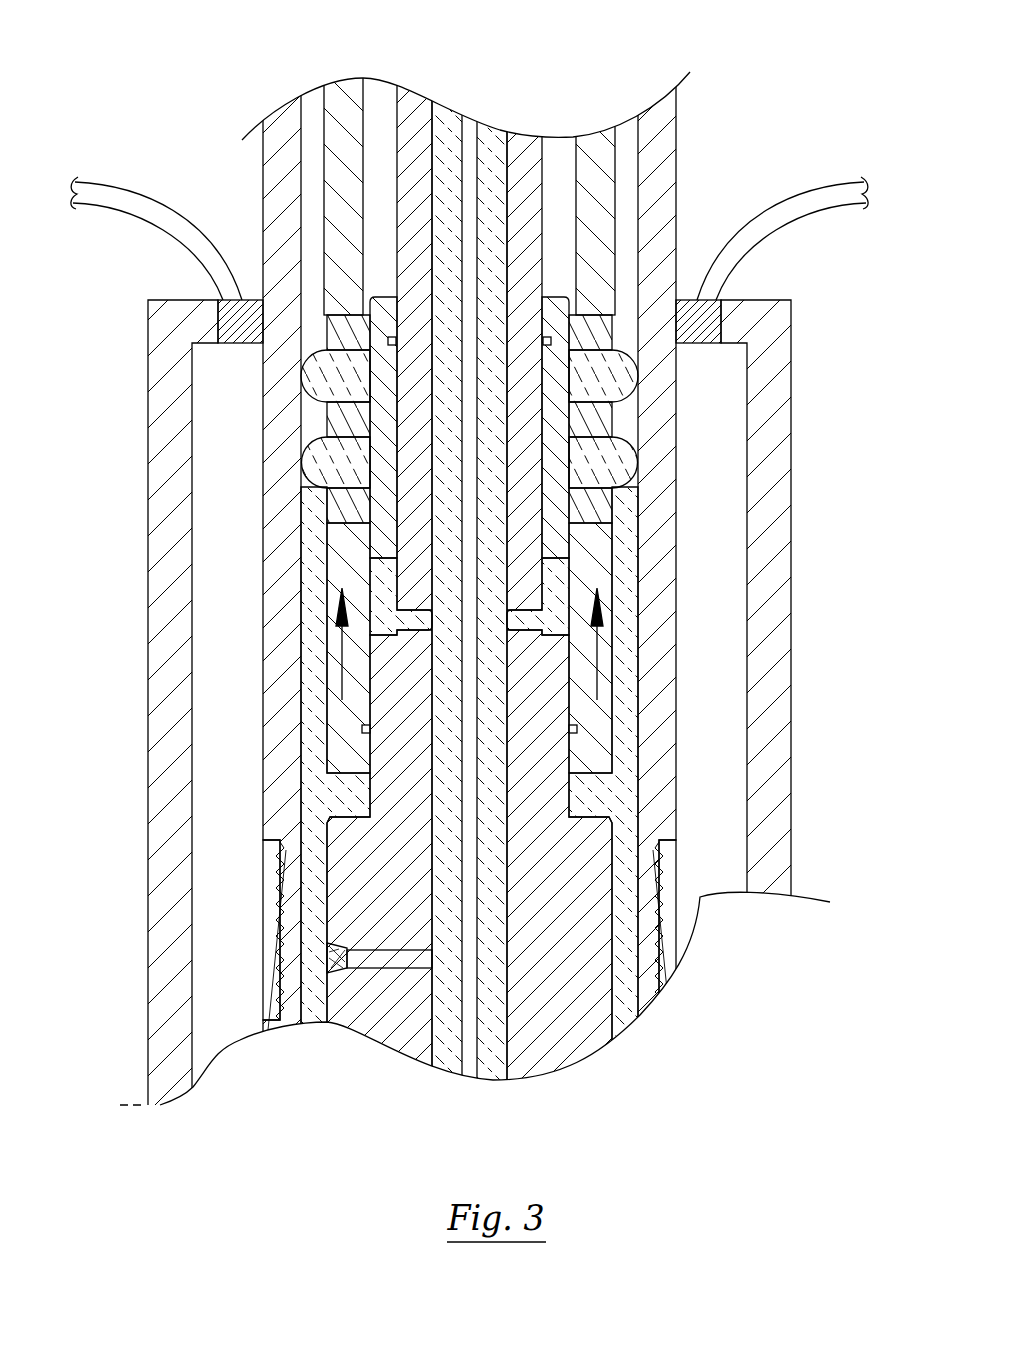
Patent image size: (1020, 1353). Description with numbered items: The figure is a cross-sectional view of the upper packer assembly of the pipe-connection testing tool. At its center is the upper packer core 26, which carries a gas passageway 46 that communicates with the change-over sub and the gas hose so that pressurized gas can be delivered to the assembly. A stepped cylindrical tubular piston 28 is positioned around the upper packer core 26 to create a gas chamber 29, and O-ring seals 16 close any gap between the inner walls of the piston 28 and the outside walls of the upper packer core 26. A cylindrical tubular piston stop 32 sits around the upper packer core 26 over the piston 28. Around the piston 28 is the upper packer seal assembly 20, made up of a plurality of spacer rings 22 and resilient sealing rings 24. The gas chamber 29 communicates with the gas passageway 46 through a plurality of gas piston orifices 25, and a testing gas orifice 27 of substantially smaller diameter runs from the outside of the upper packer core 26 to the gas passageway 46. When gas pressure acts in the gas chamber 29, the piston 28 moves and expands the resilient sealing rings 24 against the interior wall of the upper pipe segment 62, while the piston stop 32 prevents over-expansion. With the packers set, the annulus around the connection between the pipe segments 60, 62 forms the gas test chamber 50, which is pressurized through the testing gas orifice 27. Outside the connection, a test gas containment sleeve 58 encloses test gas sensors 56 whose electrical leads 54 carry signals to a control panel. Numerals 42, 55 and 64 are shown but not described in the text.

The O-ring seals 16 is at (665, 260).
The upper packer seal assembly 20 is at (262, 420).
The spacer rings 22 is at (605, 332).
The resilient sealing rings 24 is at (622, 381).
The gas piston orifices 25 is at (415, 632).
The upper packer core 26 is at (543, 1010).
The testing gas orifice 27 is at (330, 955).
The stepped cylindrical tubular piston 28 is at (583, 748).
The gas chamber 29 is at (377, 583).
The cylindrical tubular piston stop 32 is at (607, 190).
The central bore 42 is at (470, 128).
The gas passageway 46 is at (432, 242).
The gas test chamber 50 is at (443, 160).
The electrical leads 54 is at (133, 196).
The housing 55 is at (225, 1005).
The test gas sensors 56 is at (232, 315).
The test gas containment sleeve 58 is at (163, 328).
The pipe segment 60 is at (275, 1013).
The upper pipe segment 62 is at (283, 640).
The threaded ring 64 is at (653, 908).